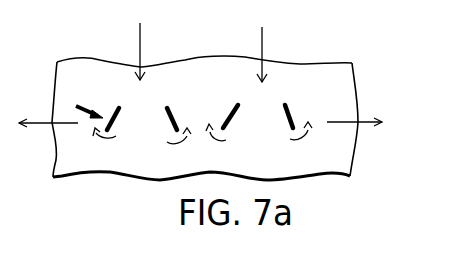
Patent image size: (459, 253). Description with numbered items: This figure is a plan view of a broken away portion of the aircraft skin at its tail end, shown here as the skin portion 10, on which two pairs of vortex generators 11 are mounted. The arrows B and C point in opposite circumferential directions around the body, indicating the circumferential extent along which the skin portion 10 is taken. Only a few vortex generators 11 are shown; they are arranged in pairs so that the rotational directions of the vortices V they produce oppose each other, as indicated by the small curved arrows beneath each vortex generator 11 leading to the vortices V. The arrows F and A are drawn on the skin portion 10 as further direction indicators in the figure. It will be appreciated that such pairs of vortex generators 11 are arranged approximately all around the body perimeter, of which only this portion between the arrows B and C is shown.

The substrate body 10 is at (115, 175).
The vortex generators 11 is at (118, 111).
The force direction F is at (138, 38).
The direction A is at (89, 102).
The arrow B is at (48, 122).
The arrow C is at (344, 121).
The vortices V is at (102, 140).